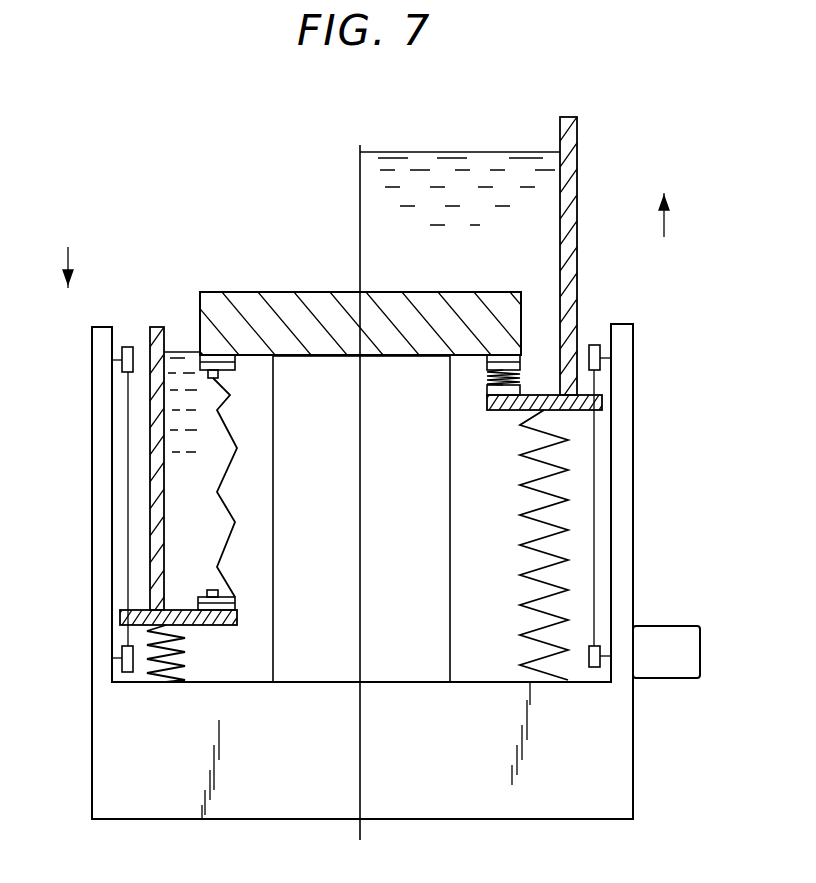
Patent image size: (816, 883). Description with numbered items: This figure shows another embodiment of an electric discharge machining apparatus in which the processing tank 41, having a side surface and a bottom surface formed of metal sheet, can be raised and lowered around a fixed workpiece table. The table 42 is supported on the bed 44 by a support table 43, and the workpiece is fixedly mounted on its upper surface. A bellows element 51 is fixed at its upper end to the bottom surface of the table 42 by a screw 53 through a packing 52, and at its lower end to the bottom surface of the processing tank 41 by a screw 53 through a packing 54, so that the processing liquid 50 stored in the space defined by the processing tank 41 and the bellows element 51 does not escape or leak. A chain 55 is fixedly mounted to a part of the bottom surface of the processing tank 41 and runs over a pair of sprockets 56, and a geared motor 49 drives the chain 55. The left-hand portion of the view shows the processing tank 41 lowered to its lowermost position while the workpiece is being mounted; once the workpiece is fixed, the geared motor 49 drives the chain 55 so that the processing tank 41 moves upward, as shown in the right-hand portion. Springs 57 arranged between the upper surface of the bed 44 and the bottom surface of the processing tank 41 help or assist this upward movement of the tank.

The processing tank 41 is at (156, 330).
The table 42 is at (445, 300).
The support table 43 is at (452, 552).
The bed 44 is at (617, 778).
The geared motor 49 is at (667, 637).
The processing liquid 50 is at (445, 152).
The bellows element 51 is at (232, 515).
The packing 52 is at (223, 368).
The screw 53 is at (216, 380).
The packing 54 is at (235, 607).
The chain 55 is at (125, 457).
The sprocket 56 is at (129, 346).
The springs 57 is at (124, 637).